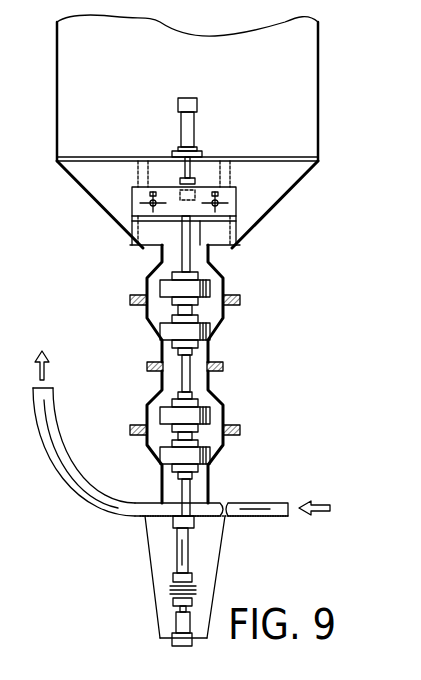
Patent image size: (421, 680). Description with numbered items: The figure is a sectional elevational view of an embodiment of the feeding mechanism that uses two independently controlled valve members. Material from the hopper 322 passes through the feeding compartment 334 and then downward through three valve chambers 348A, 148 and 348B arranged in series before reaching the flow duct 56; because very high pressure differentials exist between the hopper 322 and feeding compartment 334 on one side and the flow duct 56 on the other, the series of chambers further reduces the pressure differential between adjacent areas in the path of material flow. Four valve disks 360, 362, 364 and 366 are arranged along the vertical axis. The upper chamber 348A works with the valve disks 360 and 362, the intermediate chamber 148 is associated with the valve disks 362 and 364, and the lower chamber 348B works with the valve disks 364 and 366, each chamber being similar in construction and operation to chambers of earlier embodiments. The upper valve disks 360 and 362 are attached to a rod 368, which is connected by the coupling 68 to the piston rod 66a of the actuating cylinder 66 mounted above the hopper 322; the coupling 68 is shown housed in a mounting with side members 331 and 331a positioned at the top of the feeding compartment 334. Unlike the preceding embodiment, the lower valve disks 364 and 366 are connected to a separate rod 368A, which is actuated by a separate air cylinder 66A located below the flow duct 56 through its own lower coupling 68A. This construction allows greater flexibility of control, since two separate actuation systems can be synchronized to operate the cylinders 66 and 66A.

The hopper 322 is at (280, 196).
The actuating cylinder 66 is at (197, 120).
The piston rod 66a is at (190, 182).
The coupling 68 is at (200, 190).
The adjustment knob 331 is at (132, 192).
The adjustment knob 331a is at (236, 204).
The feeding compartment 334 is at (240, 232).
The rod 368 is at (185, 228).
The valve chamber 348A is at (226, 290).
The valve disk 360 is at (162, 290).
The valve disk 362 is at (162, 332).
The valve chamber 148 is at (224, 356).
The valve chamber 348B is at (226, 415).
The valve disk 364 is at (162, 412).
The valve disk 366 is at (162, 456).
The separate rod 368A is at (200, 490).
The flow duct 56 is at (105, 510).
The lower bearing housing 68A is at (200, 578).
The separate air cylinder 66A is at (200, 612).